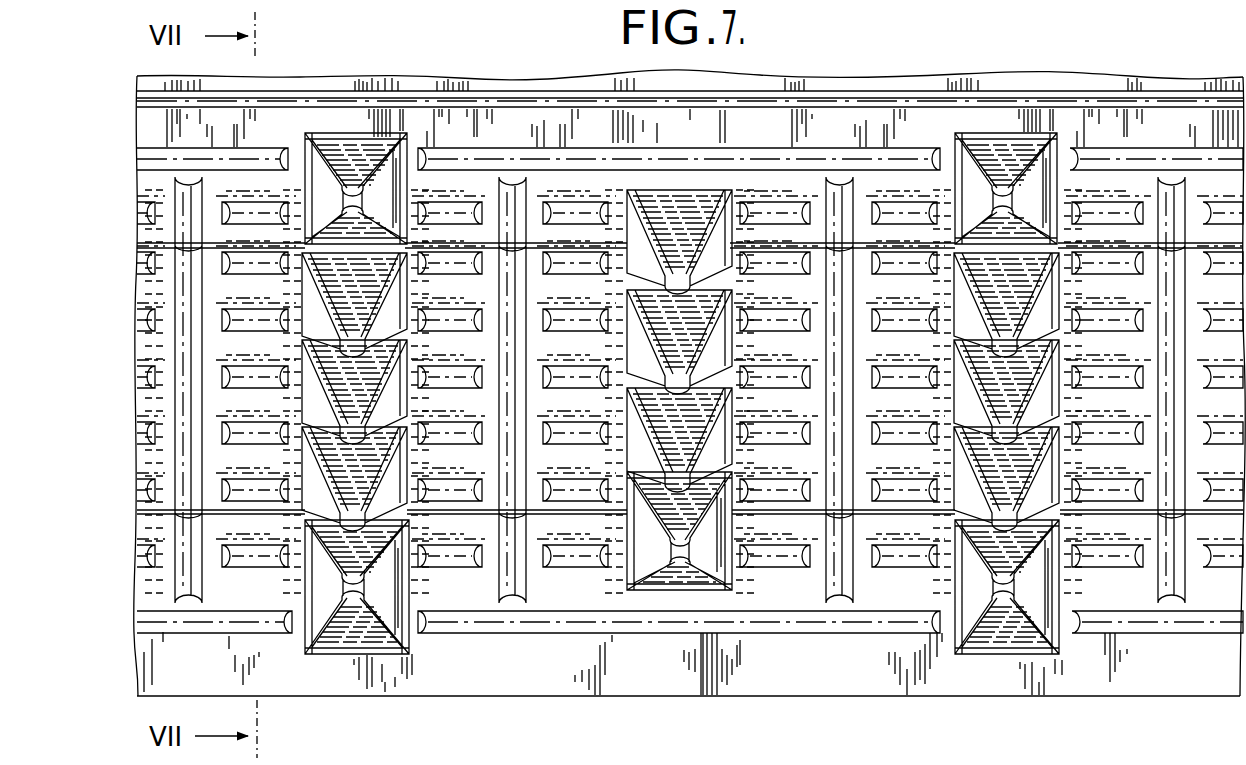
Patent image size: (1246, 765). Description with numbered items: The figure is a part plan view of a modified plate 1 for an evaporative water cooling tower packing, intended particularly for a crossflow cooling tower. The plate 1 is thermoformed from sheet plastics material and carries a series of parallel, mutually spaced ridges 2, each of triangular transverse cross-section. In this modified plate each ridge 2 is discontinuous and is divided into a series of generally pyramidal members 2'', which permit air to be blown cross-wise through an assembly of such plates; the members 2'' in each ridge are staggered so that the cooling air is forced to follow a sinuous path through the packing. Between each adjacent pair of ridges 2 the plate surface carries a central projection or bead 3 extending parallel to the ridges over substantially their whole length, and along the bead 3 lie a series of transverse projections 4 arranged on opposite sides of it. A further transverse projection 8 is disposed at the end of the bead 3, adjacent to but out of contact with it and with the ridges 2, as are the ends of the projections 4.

The plate 1 is at (470, 72).
The ridge 2 is at (682, 389).
The pyramidal member 2'' is at (574, 320).
The projection or bead 3 is at (514, 585).
The transverse projection 4 is at (455, 560).
The transverse projection 8 is at (873, 150).